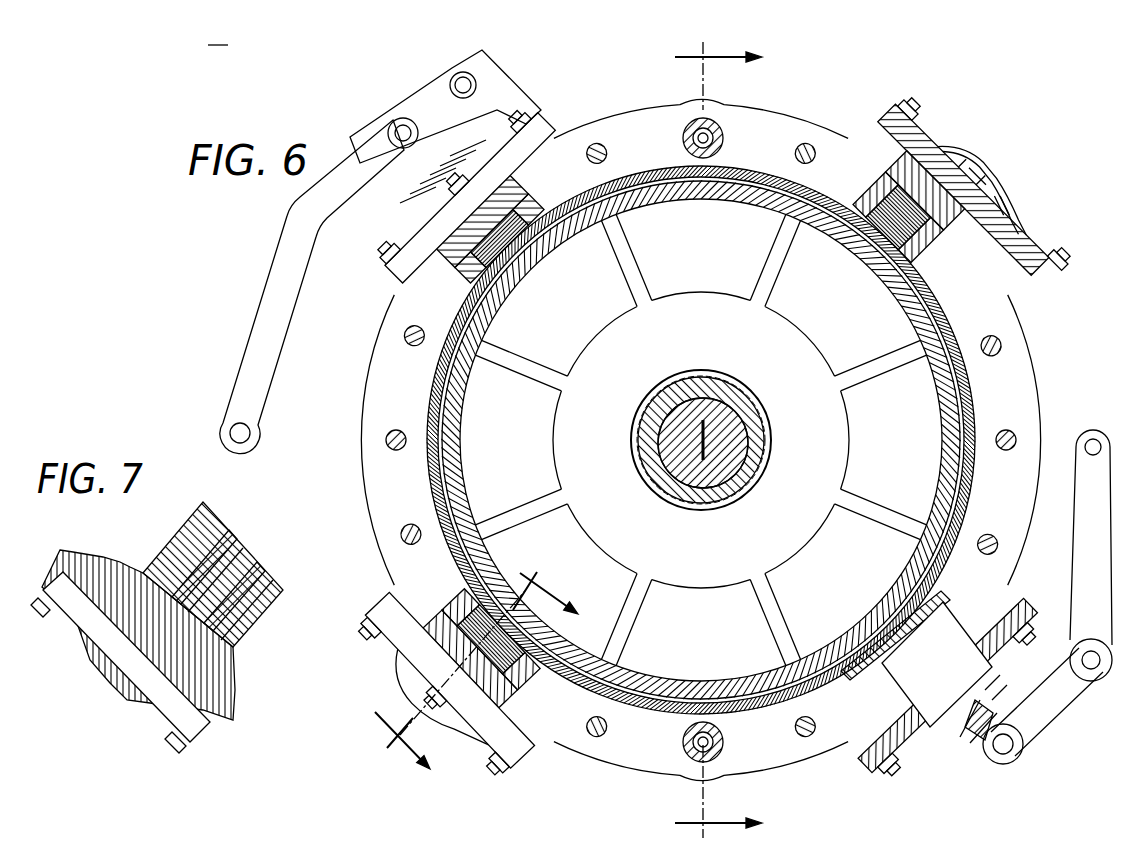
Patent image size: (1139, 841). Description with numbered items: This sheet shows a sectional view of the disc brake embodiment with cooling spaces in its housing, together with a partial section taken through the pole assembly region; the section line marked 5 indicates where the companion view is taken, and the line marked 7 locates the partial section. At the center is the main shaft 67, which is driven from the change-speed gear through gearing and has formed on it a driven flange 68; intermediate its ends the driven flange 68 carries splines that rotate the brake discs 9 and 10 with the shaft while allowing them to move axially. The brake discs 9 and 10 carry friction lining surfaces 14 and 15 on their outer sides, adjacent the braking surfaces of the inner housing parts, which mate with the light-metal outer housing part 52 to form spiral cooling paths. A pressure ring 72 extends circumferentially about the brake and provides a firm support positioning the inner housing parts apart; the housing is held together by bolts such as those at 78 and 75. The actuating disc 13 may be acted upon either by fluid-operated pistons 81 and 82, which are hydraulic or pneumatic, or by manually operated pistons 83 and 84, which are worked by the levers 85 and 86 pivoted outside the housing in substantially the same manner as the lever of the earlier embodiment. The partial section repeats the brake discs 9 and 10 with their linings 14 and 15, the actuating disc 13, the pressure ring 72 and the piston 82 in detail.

In FIG. 6, the section line 5- 5 is at (706, 440).
In FIG. 6, the section line 7- 7 is at (463, 660).
In FIG. 6, the brake disc 9 is at (632, 488).
In FIG. 7, the brake disc 9 is at (210, 533).
In FIG. 7, the brake disc 10 is at (253, 578).
In FIG. 6, the actuating disc 13 is at (641, 188).
In FIG. 7, the actuating disc 13 is at (234, 556).
In FIG. 6, the friction lining surface 14 is at (579, 313).
In FIG. 7, the friction lining surface 14 is at (204, 506).
In FIG. 7, the friction lining surface 15 is at (280, 600).
In FIG. 6, the outer housing part 52 is at (398, 376).
In FIG. 6, the main shaft 67 is at (703, 414).
In FIG. 6, the driven flange 68 is at (747, 417).
In FIG. 6, the pressure ring 72 is at (372, 494).
In FIG. 7, the pressure ring 72 is at (152, 574).
In FIG. 6, the bolt 75 is at (723, 742).
In FIG. 6, the bolt 78 is at (724, 140).
In FIG. 6, the piston 81 is at (862, 213).
In FIG. 6, the piston 82 is at (495, 710).
In FIG. 7, the piston 82 is at (228, 645).
In FIG. 6, the piston 83 is at (480, 272).
In FIG. 6, the piston 84 is at (875, 735).
In FIG. 6, the lever 85 is at (262, 353).
In FIG. 6, the lever 86 is at (1095, 493).